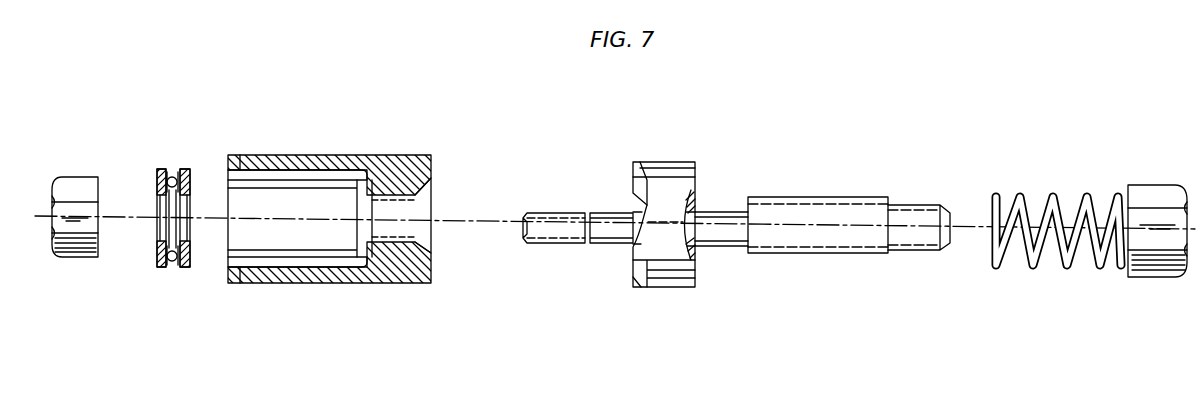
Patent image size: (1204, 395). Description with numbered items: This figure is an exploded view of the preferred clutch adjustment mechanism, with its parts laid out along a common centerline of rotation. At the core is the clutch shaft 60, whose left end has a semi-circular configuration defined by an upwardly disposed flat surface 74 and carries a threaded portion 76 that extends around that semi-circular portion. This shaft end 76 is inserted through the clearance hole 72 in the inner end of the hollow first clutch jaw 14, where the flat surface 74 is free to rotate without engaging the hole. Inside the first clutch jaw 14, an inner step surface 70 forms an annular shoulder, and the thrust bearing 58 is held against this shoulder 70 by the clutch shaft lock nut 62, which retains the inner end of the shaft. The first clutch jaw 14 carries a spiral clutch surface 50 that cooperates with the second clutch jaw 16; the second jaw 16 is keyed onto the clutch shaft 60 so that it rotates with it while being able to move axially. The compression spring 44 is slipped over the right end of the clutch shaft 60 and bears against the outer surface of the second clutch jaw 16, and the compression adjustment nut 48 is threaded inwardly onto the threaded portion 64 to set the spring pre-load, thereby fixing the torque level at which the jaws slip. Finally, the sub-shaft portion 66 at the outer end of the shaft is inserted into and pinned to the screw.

The first clutch jaw 14 is at (378, 157).
The second clutch jaw 16 is at (665, 162).
The compression spring 44 is at (1080, 194).
The compression adjustment nut 48 is at (1157, 276).
The spiral clutch surface 50 is at (432, 185).
The thrust bearing 58 is at (157, 178).
The clutch shaft 60 is at (722, 248).
The clutch shaft lock nut 62 is at (65, 258).
The threaded portion 64 is at (835, 198).
The sub-shaft portion 66 is at (928, 205).
The inner step surface 70 is at (352, 168).
The clearance hole 72 is at (394, 247).
The flat surface 74 is at (551, 214).
The threaded portion 76 is at (585, 252).